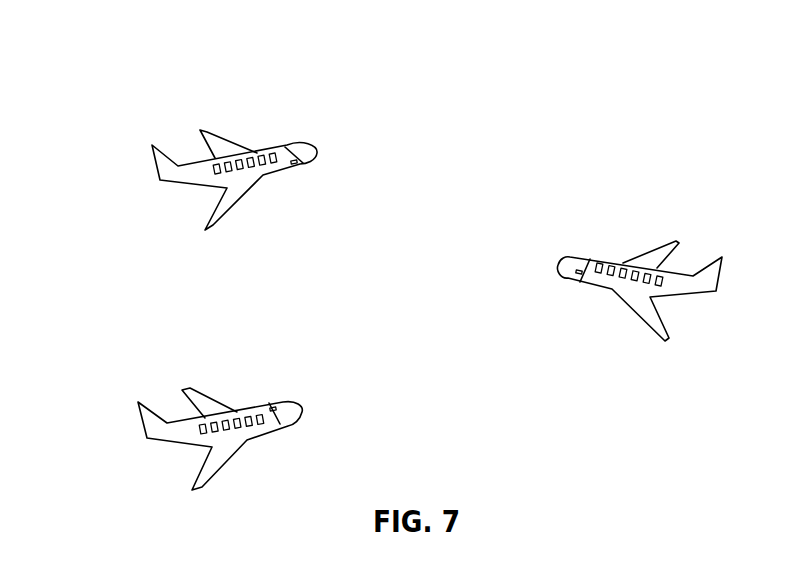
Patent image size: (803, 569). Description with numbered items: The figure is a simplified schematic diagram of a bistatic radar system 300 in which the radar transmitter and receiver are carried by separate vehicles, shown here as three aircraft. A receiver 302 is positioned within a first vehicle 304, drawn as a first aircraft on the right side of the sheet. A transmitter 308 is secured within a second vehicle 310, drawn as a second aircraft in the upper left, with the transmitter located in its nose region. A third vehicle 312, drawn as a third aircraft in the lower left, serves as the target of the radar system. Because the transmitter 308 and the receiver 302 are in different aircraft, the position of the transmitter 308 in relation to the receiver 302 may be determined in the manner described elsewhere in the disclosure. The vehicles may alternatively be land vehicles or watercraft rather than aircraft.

The bistatic radar system 300 is at (133, 100).
The receiver 302 is at (583, 274).
The first vehicle 304 is at (677, 272).
The transmitter 308 is at (298, 161).
The second vehicle 310 is at (193, 186).
The third vehicle 312 is at (257, 405).